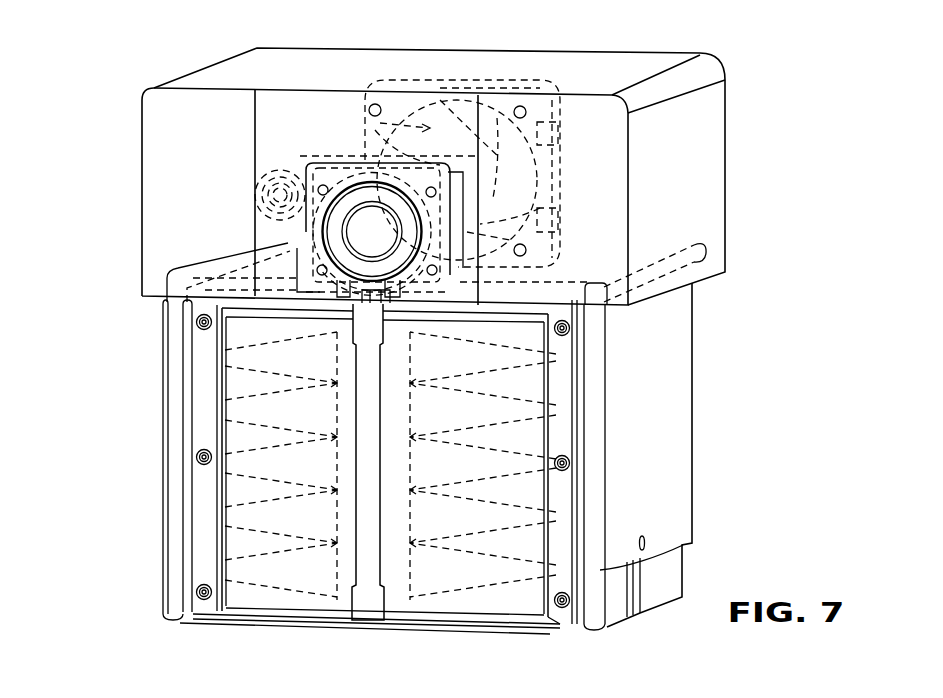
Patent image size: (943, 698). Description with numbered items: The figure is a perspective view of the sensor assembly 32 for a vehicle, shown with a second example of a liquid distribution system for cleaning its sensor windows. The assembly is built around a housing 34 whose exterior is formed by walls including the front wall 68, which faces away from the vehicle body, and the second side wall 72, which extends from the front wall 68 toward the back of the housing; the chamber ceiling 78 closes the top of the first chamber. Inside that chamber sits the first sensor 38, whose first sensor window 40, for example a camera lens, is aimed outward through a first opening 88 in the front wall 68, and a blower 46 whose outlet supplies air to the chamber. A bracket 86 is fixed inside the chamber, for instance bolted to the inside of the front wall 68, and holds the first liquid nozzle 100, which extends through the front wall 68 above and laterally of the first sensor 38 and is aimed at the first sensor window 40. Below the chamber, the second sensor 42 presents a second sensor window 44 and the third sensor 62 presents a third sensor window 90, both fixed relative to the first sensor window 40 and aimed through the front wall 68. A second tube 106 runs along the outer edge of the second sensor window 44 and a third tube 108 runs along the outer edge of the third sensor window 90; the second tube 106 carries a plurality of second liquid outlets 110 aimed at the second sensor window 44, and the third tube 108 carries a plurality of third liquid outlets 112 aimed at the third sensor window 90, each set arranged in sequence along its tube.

The sensor assembly 32 is at (749, 81).
The housing 34 is at (681, 452).
The first sensor 38 is at (377, 230).
The first sensor window 40 is at (376, 214).
The second sensor 42 is at (257, 618).
The second sensor window 44 is at (290, 593).
The blower 46 is at (543, 80).
The third sensor 62 is at (536, 632).
The front wall 68 is at (215, 114).
The second side wall 72 is at (682, 202).
The chamber ceiling 78 is at (467, 72).
The bracket 86 is at (323, 160).
The first opening 88 is at (297, 243).
The third sensor window 90 is at (508, 592).
The first liquid nozzle 100 is at (281, 175).
The second tube 106 is at (178, 486).
The third tube 108 is at (595, 443).
The second liquid outlets 110 is at (192, 358).
The third liquid outlets 112 is at (572, 412).